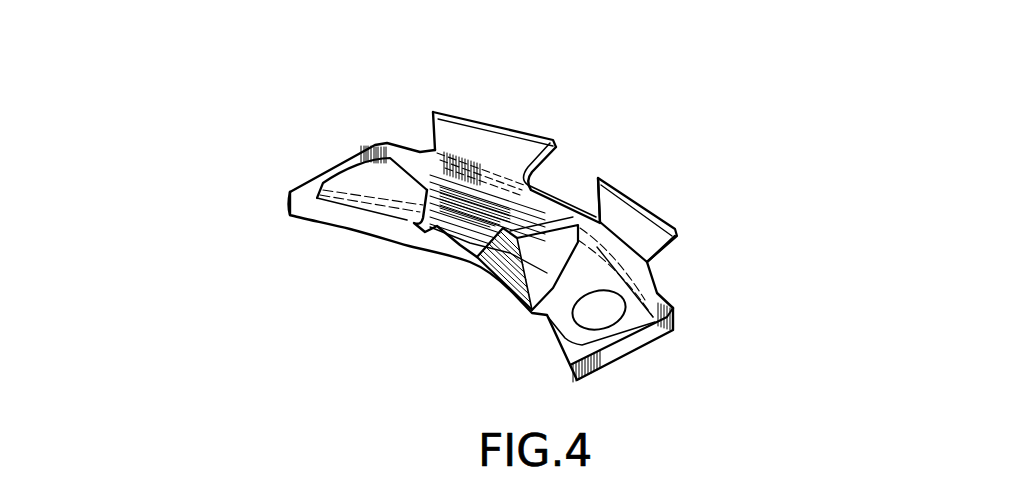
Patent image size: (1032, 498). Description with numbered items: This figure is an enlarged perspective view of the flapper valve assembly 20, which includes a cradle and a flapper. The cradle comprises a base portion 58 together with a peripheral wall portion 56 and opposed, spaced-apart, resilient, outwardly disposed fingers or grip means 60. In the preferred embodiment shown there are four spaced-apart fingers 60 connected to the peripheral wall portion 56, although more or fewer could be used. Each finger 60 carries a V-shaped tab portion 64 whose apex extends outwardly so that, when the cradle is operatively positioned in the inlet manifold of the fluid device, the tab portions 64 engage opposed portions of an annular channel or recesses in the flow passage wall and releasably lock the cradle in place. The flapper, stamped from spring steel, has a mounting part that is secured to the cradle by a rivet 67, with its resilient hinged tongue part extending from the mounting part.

The flapper valve assembly 20 is at (246, 121).
The peripheral wall portion 56 is at (655, 328).
The base portion 58 is at (647, 310).
The fingers 60 is at (555, 147).
The V-shaped tab portion 64 is at (362, 183).
The rivet 67 is at (608, 310).